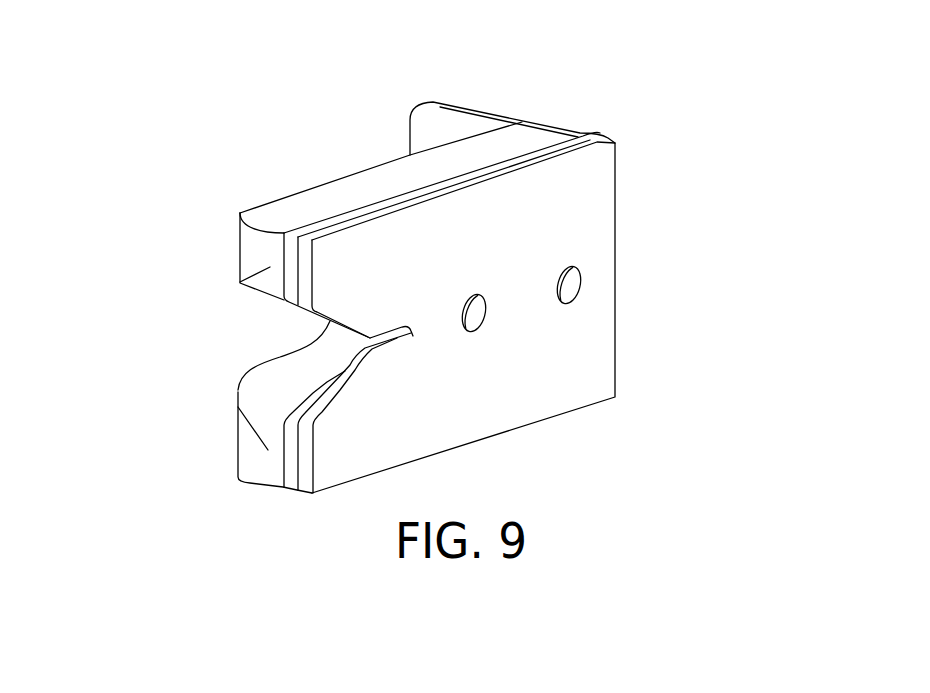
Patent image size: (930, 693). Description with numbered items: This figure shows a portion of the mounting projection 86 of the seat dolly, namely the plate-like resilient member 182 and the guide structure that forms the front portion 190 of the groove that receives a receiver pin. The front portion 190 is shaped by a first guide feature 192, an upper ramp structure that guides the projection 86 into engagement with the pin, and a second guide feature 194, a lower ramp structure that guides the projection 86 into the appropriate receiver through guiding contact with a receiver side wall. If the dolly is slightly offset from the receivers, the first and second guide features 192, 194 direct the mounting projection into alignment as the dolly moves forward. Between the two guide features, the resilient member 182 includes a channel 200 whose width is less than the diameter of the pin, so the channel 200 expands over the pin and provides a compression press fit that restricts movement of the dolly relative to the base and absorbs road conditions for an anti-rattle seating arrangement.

The mounting projection 86 is at (620, 88).
The resilient member 182 is at (585, 223).
The front portion 190 is at (204, 440).
The first guide feature 192 is at (240, 392).
The second guide feature 194 is at (238, 476).
The channel 200 is at (418, 340).